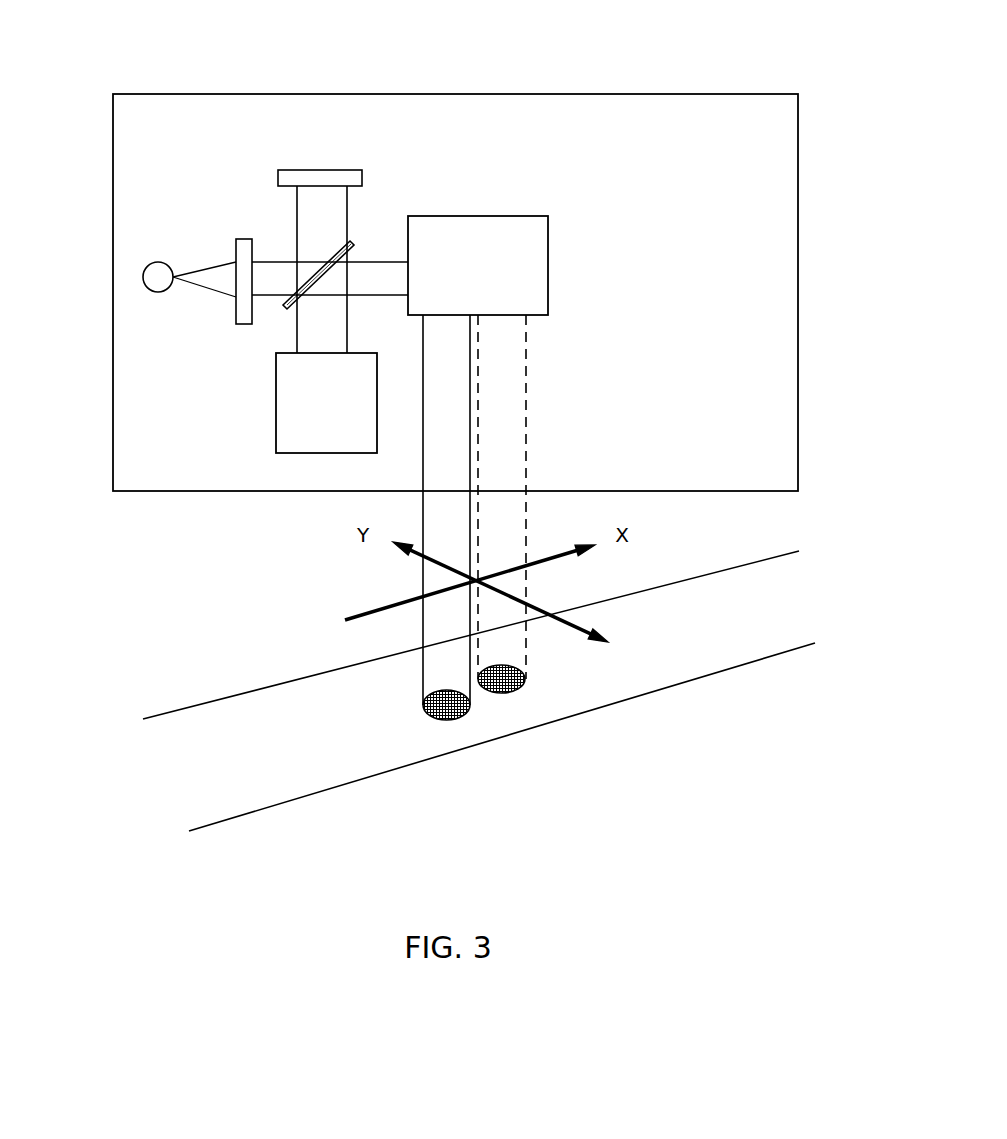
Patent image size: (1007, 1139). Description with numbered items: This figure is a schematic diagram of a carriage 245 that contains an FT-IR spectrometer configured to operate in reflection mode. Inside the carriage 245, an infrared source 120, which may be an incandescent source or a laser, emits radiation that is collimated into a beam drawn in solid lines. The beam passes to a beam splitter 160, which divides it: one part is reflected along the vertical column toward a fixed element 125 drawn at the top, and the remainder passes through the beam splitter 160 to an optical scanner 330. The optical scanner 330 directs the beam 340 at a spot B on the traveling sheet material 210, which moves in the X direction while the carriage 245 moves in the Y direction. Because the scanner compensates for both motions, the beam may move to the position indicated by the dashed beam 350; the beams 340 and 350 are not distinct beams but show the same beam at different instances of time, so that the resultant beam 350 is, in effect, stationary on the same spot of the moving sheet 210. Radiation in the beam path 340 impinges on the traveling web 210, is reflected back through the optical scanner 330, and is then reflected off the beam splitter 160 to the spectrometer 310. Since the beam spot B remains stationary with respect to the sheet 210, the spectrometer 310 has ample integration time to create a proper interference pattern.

The carriage 245 is at (438, 93).
The infrared source 120 is at (154, 262).
The mirror / reflector 125 is at (328, 170).
The beam splitter 160 is at (358, 245).
The optical scanner 330 is at (502, 247).
The spectrometer 310 is at (299, 399).
The beam 340 is at (455, 431).
The resultant beam 350 is at (508, 445).
The traveling sheet material 210 is at (713, 636).
The beam spot B is at (515, 695).